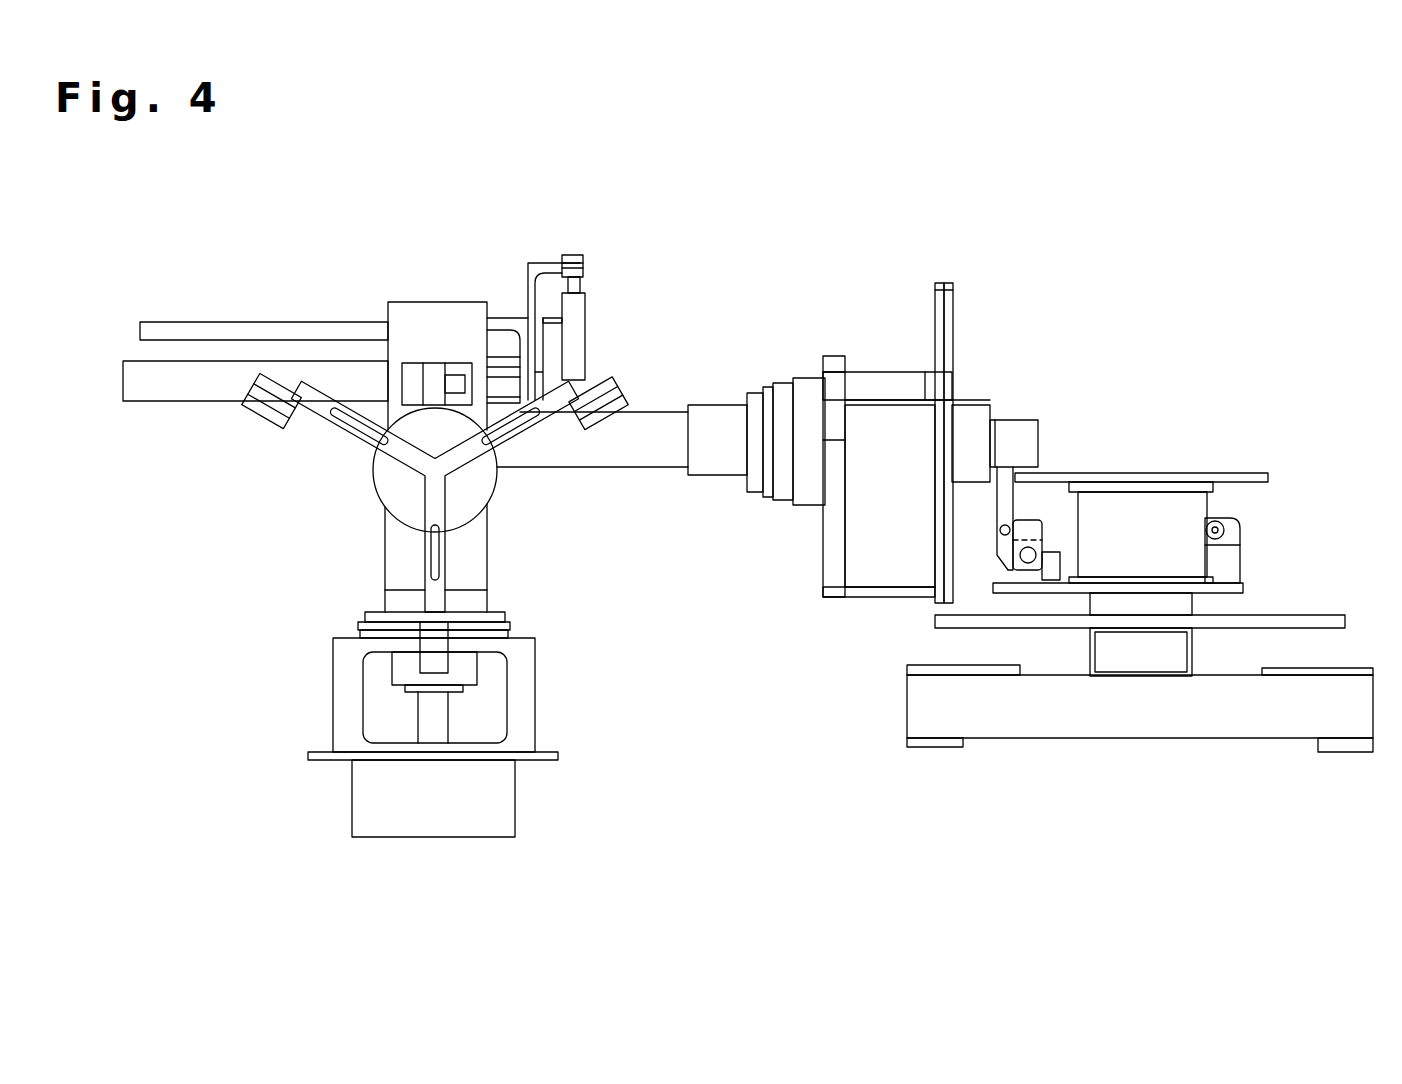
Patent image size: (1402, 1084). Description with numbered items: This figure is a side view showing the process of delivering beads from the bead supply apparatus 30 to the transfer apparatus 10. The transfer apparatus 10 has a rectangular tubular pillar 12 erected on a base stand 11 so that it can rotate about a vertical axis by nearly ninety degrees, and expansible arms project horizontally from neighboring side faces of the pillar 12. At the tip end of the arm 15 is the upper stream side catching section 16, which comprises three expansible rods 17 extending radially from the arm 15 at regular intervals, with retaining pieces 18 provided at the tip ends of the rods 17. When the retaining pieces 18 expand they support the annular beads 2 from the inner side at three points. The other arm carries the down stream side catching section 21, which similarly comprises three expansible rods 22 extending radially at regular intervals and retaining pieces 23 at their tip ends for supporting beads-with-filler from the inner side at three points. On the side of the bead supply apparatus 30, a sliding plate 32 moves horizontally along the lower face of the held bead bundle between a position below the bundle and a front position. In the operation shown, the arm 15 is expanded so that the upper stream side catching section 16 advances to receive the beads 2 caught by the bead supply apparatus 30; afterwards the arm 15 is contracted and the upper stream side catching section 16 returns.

The transfer apparatus 10 is at (500, 215).
The base stand 11 is at (537, 700).
The rectangular tubular pillar 12 is at (440, 300).
The expansible arm 15 is at (610, 470).
The upper stream side catching section 16 is at (713, 548).
The expansible rod 17 is at (820, 540).
The retaining piece 18 is at (905, 372).
The bead 2 is at (940, 283).
The down stream side catching section 21 is at (207, 462).
The expansible rod 22 is at (340, 428).
The retaining piece 23 is at (267, 417).
The bead supply apparatus 30 is at (1069, 205).
The sliding plate 32 is at (1255, 473).